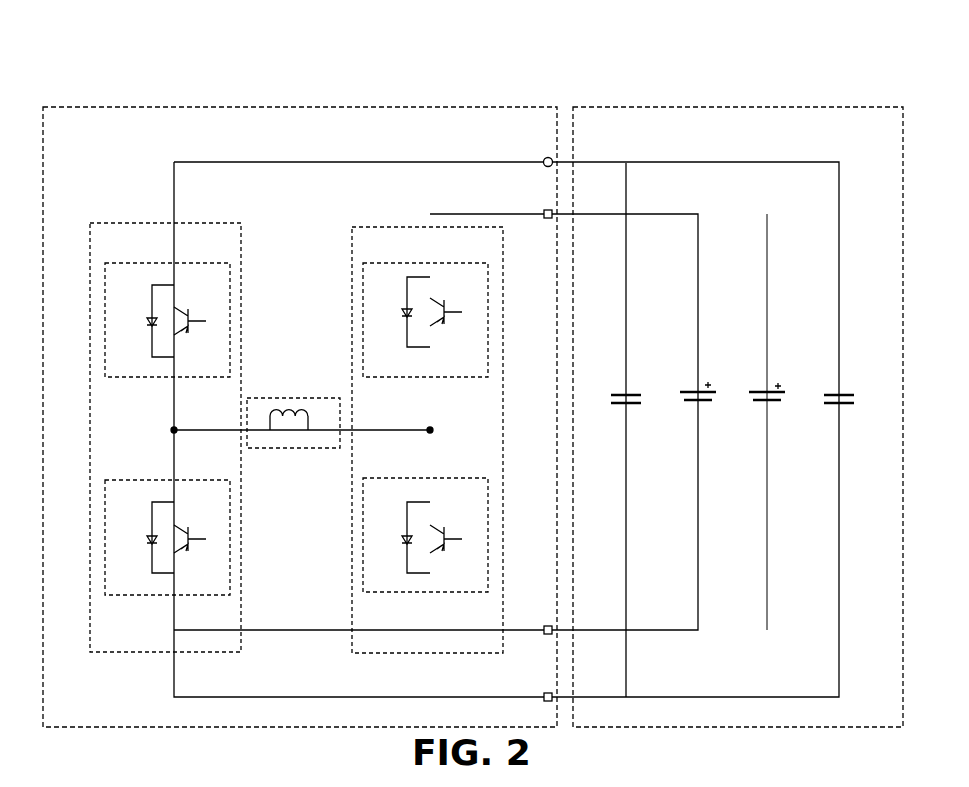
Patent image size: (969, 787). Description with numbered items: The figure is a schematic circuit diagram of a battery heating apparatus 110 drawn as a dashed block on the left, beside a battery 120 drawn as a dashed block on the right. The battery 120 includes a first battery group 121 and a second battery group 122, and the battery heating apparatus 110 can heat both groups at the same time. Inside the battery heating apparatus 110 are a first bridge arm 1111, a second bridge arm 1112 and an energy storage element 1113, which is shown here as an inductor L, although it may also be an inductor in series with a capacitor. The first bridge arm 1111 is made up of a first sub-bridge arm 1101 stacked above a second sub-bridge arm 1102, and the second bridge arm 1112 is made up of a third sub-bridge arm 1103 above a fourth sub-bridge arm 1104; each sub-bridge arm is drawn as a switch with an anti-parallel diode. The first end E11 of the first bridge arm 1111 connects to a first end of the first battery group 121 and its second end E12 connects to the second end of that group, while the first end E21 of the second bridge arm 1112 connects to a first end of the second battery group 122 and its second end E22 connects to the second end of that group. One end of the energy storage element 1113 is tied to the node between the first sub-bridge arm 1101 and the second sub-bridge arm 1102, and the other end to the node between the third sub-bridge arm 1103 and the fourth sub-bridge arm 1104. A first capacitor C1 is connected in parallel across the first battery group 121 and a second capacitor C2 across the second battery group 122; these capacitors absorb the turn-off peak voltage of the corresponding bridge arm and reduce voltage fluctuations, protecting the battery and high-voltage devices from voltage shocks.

The battery heating apparatus 110 is at (297, 107).
The battery 120 is at (690, 107).
The second bridge arm 1112 is at (125, 222).
The first bridge arm 1111 is at (490, 227).
The energy storage element 1113 is at (293, 440).
The first sub-bridge arm 1101 is at (405, 263).
The second sub-bridge arm 1102 is at (405, 478).
The third sub-bridge arm 1103 is at (150, 263).
The fourth sub-bridge arm 1104 is at (150, 480).
The first battery group 121 is at (700, 405).
The second battery group 122 is at (770, 405).
The first capacitor C1 is at (637, 406).
The second capacitor C2 is at (852, 405).
The inductor L is at (325, 418).
The first end of first bridge arm E11 is at (537, 229).
The second end of first bridge arm E12 is at (535, 622).
The first end of second bridge arm E21 is at (535, 153).
The second end of second bridge arm E22 is at (535, 689).